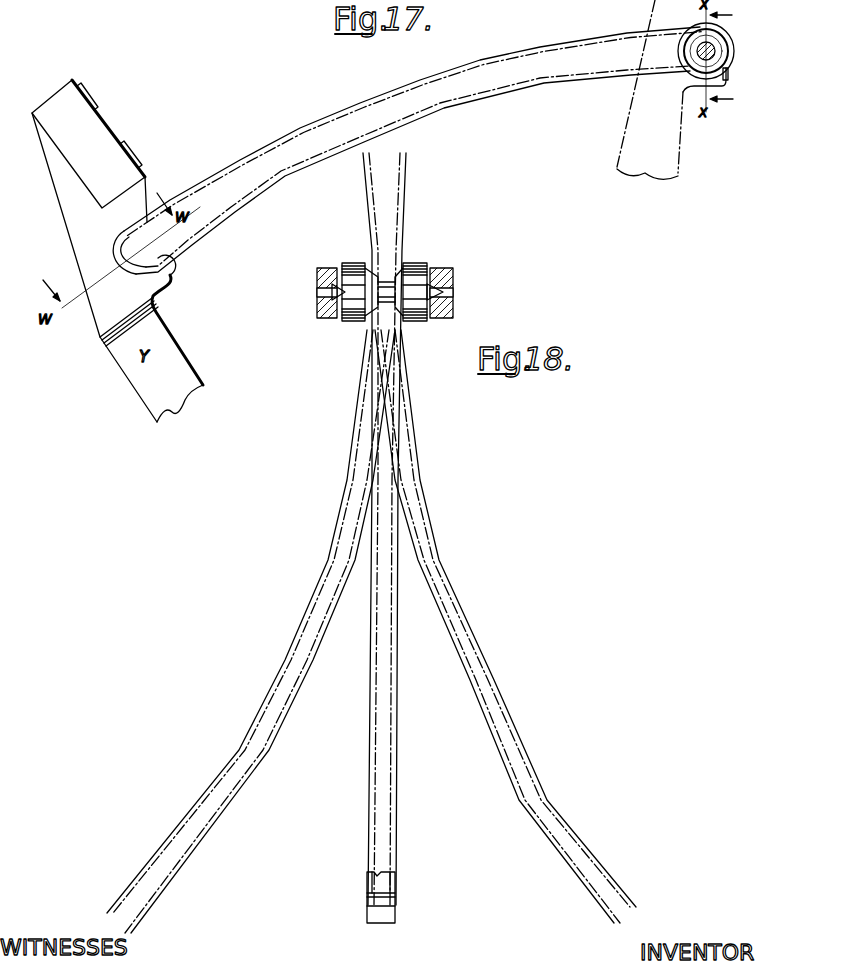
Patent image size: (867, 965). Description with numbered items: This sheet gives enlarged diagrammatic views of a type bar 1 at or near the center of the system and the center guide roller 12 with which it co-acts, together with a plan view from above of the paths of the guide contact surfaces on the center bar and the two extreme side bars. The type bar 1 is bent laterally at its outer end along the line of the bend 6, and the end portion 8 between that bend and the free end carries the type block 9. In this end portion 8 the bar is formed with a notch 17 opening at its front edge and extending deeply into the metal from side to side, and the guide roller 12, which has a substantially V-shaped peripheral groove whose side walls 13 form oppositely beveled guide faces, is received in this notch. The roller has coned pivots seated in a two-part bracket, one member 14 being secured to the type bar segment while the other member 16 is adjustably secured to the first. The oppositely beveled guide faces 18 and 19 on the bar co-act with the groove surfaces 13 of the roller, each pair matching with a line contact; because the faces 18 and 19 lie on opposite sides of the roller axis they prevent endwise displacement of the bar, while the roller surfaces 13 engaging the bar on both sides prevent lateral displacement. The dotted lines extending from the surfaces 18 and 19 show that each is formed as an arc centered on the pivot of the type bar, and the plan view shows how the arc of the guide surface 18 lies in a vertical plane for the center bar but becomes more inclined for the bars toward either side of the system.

In FIG. 17, the type bar 1 is at (671, 89).
In FIG. 17, the line of the bend 6 is at (100, 337).
In FIG. 17, the end portion 8 is at (94, 267).
In FIG. 17, the type block 9 is at (88, 144).
In FIG. 17, the guide roller 12 is at (733, 50).
In FIG. 18, the guide roller 12 is at (355, 263).
In FIG. 17, the side walls of the groove 13 is at (745, 0).
In FIG. 18, the side walls of the groove 13 is at (404, 262).
In FIG. 18, the bracket member 14 is at (445, 320).
In FIG. 18, the bracket member 16 is at (328, 320).
In FIG. 17, the notch 17 is at (150, 250).
In FIG. 17, the guide face 18 is at (177, 270).
In FIG. 18, the guide face 18 is at (160, 866).
In FIG. 17, the guide face 19 is at (146, 224).